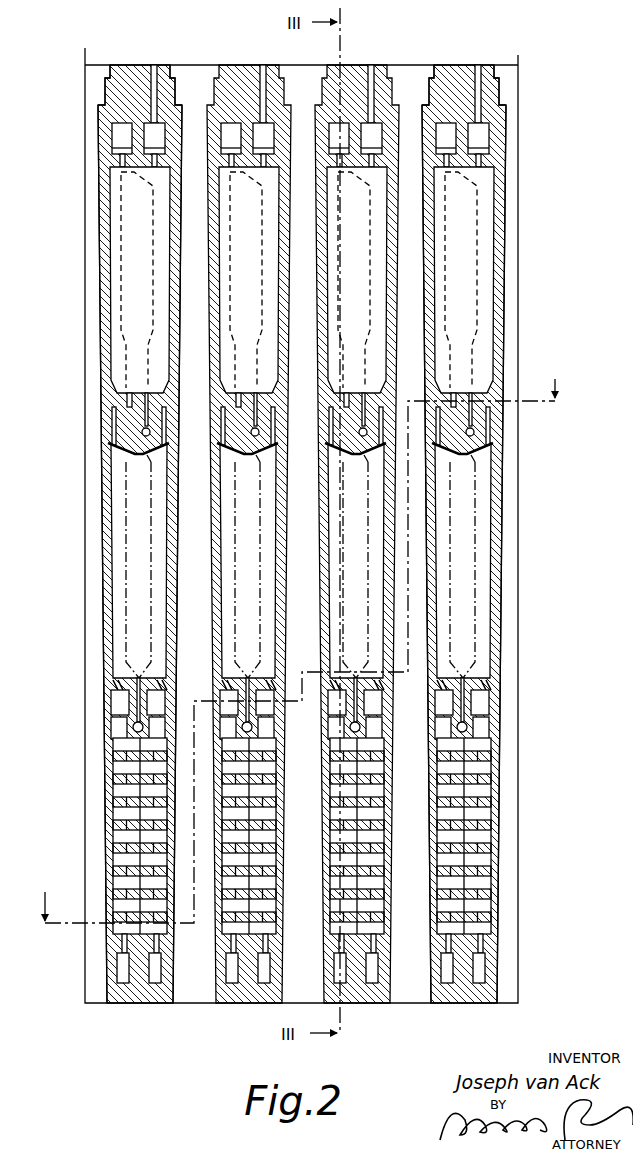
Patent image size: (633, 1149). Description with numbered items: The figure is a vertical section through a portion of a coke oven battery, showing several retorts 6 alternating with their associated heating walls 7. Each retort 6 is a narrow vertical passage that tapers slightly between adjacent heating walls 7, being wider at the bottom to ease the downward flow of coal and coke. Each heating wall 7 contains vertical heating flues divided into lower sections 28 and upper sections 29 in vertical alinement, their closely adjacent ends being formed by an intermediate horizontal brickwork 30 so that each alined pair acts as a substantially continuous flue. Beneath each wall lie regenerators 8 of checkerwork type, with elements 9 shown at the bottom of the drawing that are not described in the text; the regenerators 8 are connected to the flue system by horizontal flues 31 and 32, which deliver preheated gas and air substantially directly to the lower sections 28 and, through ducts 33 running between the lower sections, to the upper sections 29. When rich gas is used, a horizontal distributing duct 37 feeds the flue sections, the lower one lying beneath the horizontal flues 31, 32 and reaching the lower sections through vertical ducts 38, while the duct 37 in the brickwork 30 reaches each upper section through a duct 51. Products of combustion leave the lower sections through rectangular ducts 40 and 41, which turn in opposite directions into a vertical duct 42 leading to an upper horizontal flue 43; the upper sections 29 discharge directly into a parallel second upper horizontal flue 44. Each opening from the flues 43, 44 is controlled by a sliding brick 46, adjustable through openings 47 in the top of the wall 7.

The retort 6 is at (188, 508).
The heating wall 7 is at (105, 567).
The regenerator 8 is at (118, 800).
The contact pins 9 is at (158, 983).
The lower section 28 is at (118, 628).
The upper section 29 is at (112, 297).
The horizontal brickwork 30 is at (115, 400).
The horizontal flue 31 is at (112, 700).
The horizontal flue 32 is at (135, 713).
The duct 33 is at (128, 597).
The horizontal distributing duct 37 is at (150, 440).
The vertical duct 38 is at (112, 683).
The rectangular duct 40 is at (113, 432).
The rectangular duct 41 is at (147, 452).
The vertical duct 42 is at (128, 348).
The upper horizontal flue 43 is at (118, 142).
The second upper horizontal flue 44 is at (480, 143).
The sliding brick 46 is at (113, 112).
The opening 47 is at (467, 90).
The duct 51 is at (520, 401).